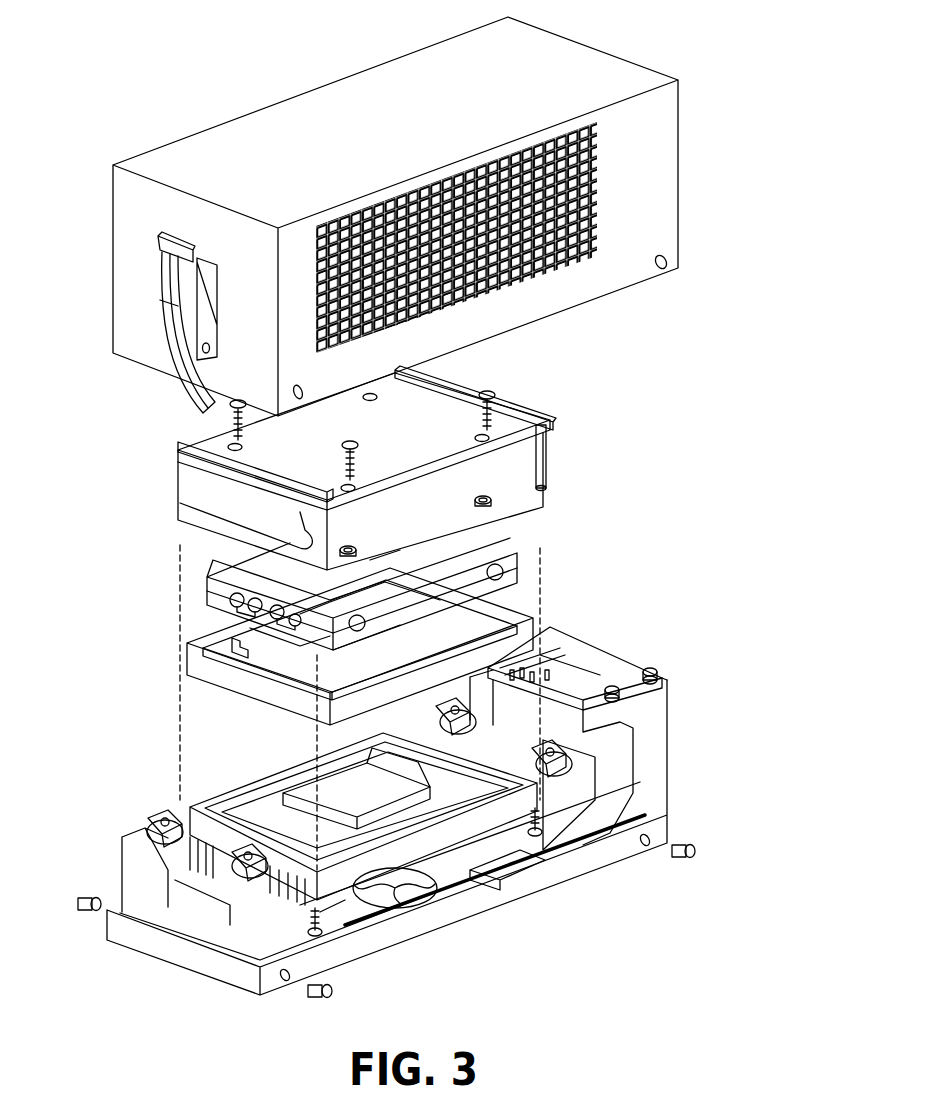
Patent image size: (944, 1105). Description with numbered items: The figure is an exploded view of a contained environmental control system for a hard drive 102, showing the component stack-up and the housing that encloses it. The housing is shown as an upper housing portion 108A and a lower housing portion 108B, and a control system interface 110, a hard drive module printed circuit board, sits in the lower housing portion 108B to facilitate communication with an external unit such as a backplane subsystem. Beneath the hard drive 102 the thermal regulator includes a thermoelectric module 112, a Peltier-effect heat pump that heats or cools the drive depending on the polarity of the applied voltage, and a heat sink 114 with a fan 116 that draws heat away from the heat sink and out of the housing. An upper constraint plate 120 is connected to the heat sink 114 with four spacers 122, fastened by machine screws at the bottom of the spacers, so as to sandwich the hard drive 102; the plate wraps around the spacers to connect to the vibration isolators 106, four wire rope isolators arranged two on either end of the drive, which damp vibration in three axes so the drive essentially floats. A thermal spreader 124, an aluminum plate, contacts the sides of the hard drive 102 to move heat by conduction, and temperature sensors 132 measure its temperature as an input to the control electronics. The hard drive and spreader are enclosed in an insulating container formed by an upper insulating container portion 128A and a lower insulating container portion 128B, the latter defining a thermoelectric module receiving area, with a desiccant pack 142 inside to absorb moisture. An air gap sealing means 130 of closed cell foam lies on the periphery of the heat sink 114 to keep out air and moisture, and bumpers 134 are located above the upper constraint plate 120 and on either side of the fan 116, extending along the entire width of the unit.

The hard drive 102 is at (520, 542).
The vibration isolator 106 is at (436, 728).
The upper housing portion 108A is at (585, 66).
The lower housing portion 108B is at (650, 785).
The control system interface 110 is at (613, 668).
The thermoelectric module 112 is at (345, 793).
The heat sink 114 is at (512, 835).
The fan 116 is at (443, 890).
The upper constraint plate 120 is at (217, 448).
The spacers 122 is at (182, 482).
The thermal spreader 124 is at (520, 575).
The upper insulating container portion 128A is at (540, 512).
The lower insulating container portion 128B is at (215, 680).
The air gap sealing means 130 is at (215, 800).
The temperature sensors 132 is at (255, 618).
The bumpers 134 is at (455, 378).
The desiccant pack 142 is at (300, 688).